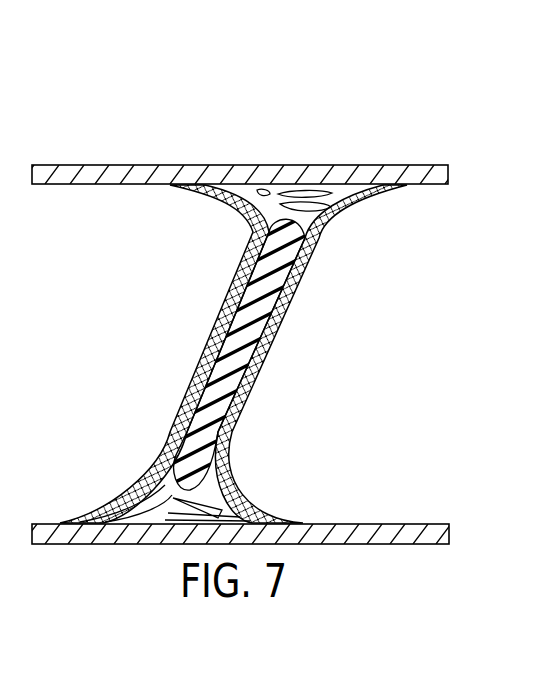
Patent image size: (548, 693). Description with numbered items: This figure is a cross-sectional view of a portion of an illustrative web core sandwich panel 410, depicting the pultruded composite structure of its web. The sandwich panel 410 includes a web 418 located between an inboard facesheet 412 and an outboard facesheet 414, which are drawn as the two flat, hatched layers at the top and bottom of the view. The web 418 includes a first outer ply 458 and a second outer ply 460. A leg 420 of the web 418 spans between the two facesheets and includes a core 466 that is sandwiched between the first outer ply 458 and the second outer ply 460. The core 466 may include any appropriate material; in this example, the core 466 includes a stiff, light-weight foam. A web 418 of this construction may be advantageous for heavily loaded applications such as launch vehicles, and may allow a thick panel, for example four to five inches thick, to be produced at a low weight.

The sandwich panel 410 is at (128, 141).
The inboard facesheet 412 is at (431, 523).
The outboard facesheet 414 is at (446, 187).
The web 418 is at (365, 317).
The leg 420 is at (283, 361).
The first outer ply 458 is at (243, 214).
The second outer ply 460 is at (331, 215).
The core 466 is at (227, 367).